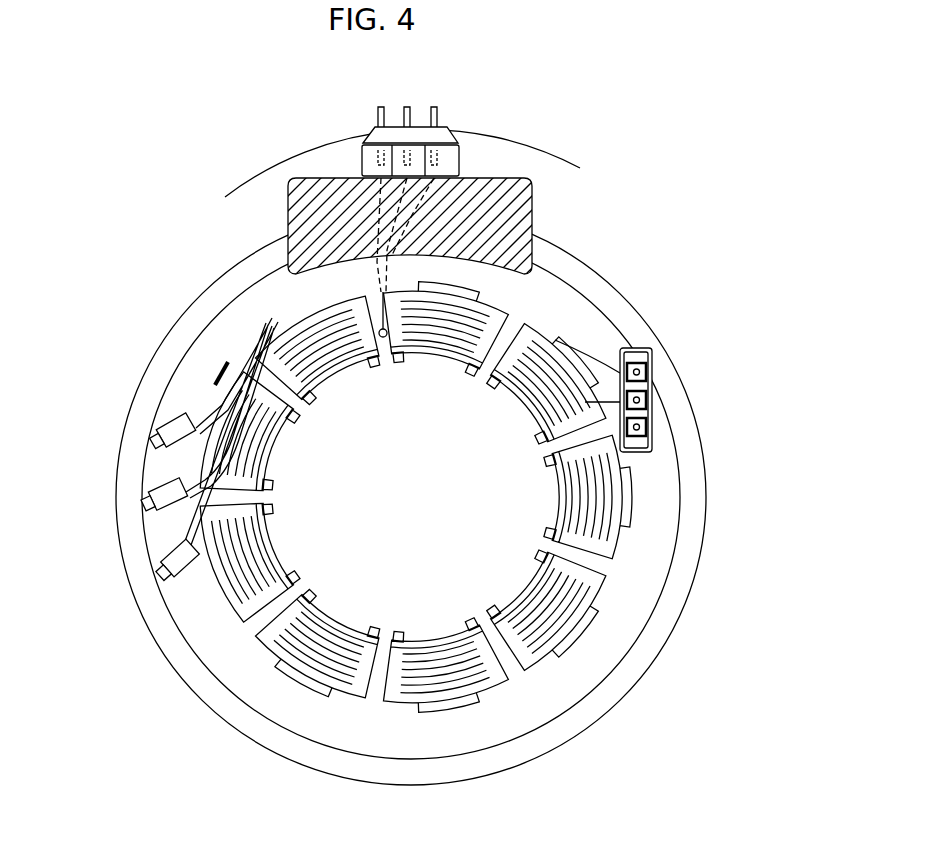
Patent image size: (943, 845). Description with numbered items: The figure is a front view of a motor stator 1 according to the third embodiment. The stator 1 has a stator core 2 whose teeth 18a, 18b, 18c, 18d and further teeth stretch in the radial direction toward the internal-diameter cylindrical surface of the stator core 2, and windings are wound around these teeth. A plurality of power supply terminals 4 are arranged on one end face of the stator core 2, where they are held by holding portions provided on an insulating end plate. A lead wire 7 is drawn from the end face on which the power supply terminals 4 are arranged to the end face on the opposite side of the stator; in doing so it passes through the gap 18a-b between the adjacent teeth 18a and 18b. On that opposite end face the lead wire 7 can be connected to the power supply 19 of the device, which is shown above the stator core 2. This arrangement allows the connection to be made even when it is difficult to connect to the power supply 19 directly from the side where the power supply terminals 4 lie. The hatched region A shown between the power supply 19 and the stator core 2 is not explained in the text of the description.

The stator 1 is at (670, 642).
The stator core 2 is at (582, 716).
The power supply terminals 4 is at (172, 572).
The lead wire 7 is at (275, 301).
The tooth 18a is at (343, 378).
The tooth 18b is at (427, 360).
The tooth 18c is at (516, 405).
The tooth 18d is at (553, 495).
The gap between adjacent teeth 18a-b is at (383, 338).
The power supply 19 is at (408, 107).
The resin portion A is at (322, 192).